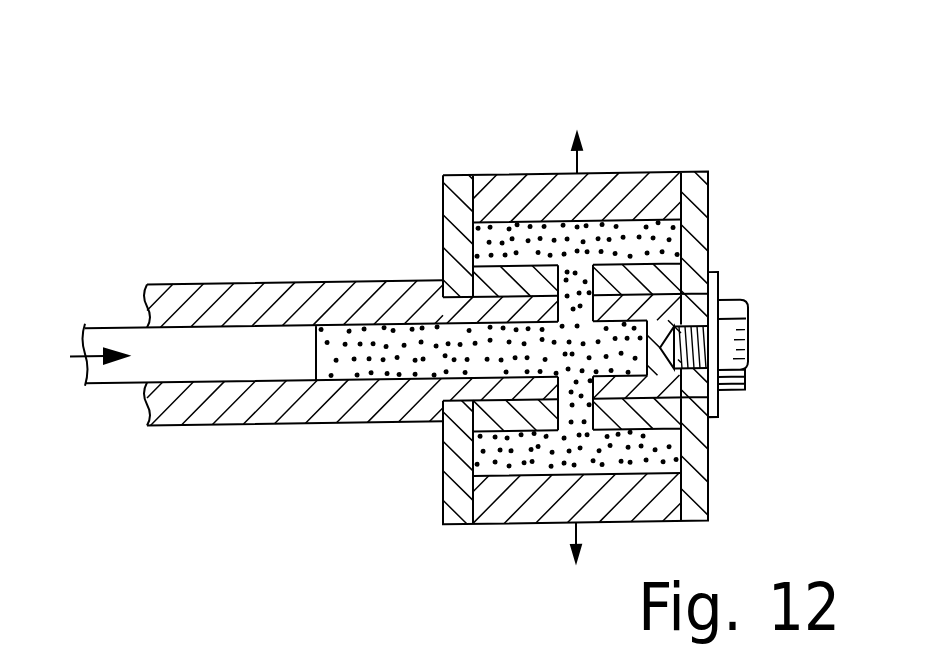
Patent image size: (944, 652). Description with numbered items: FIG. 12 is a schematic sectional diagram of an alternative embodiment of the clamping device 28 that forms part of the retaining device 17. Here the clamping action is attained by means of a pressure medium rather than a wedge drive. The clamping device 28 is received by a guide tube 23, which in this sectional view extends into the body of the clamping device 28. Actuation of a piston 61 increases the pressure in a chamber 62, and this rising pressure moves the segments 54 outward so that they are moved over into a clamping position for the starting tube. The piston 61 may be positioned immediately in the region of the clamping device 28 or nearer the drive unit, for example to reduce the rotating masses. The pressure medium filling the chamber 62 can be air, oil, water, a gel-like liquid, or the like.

The retaining device 17 is at (400, 138).
The guide tube 23 is at (340, 405).
The clamping device 28 is at (600, 140).
The segments 54 is at (647, 173).
The piston 61 is at (207, 358).
The chamber 62 is at (667, 233).